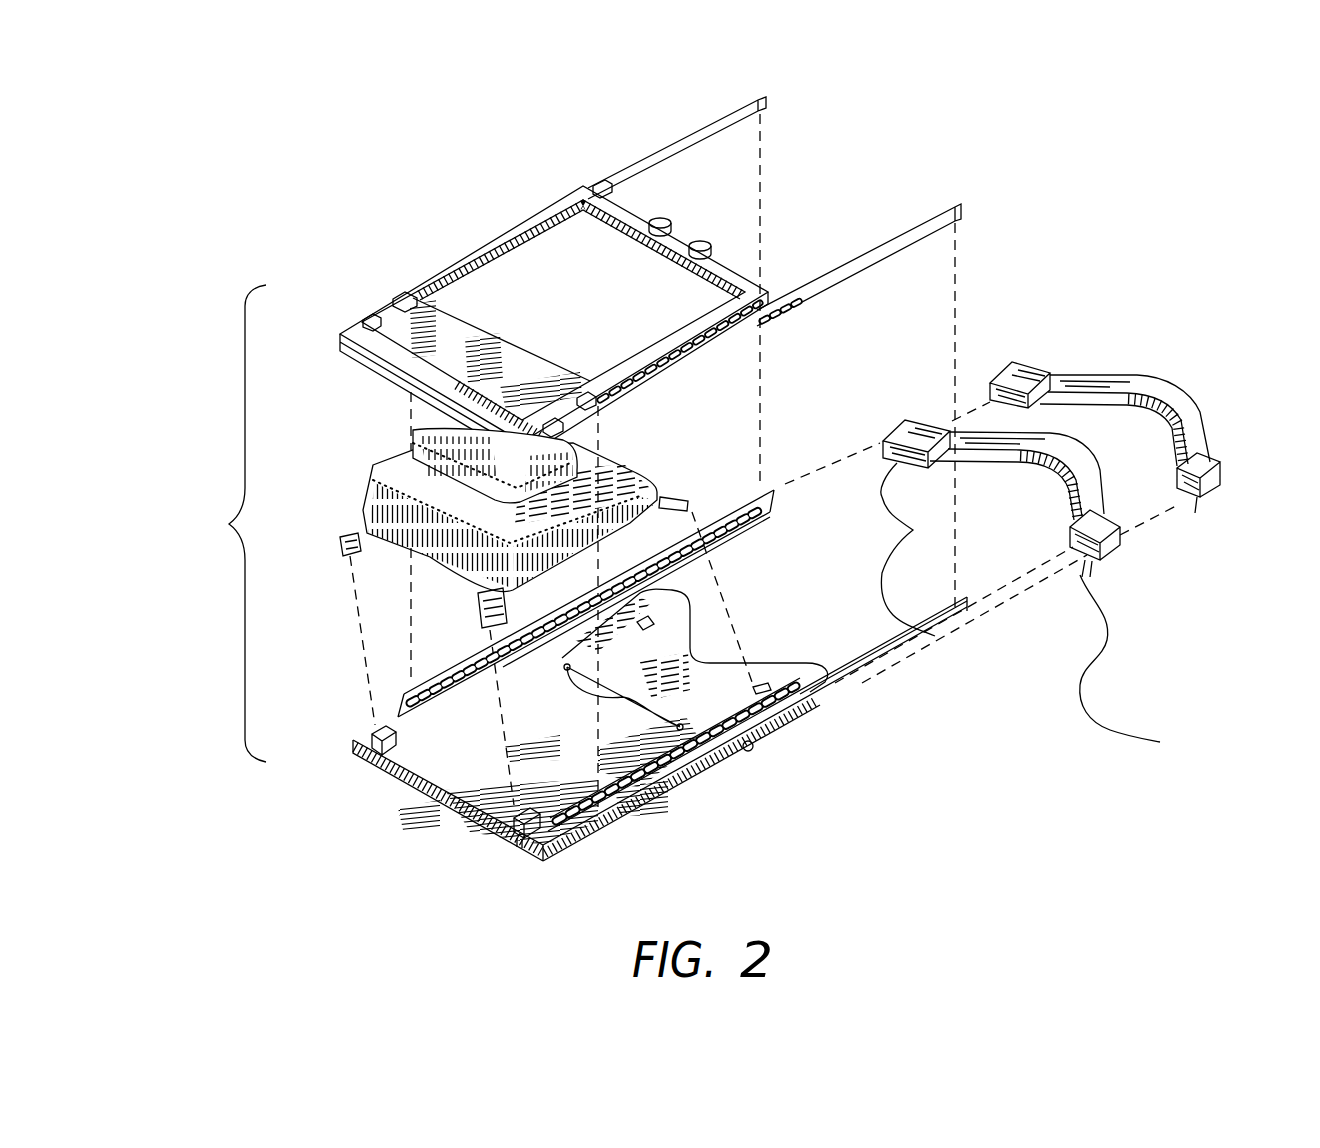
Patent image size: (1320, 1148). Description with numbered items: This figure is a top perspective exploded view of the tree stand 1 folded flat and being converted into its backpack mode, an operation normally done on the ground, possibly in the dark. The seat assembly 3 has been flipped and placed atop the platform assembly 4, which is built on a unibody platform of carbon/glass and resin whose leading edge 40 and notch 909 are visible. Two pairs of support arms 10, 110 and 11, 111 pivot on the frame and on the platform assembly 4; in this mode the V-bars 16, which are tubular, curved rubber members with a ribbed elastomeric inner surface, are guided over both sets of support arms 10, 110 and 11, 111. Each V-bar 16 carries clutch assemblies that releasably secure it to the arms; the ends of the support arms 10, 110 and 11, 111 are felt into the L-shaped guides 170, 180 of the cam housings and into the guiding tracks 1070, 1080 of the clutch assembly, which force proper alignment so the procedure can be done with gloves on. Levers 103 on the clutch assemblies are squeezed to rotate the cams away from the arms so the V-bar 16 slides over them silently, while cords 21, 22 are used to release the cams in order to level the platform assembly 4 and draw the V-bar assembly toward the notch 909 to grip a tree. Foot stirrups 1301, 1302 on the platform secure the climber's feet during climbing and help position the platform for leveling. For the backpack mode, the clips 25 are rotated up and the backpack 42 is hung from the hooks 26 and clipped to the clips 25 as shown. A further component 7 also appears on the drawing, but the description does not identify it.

The tree stand 1 is at (224, 523).
The seat assembly 3 is at (415, 202).
The platform assembly 4 is at (750, 795).
The knob 7 is at (713, 245).
The support arm 10 is at (727, 115).
The support arm 110 is at (923, 223).
The support arm 11 is at (768, 512).
The support arm 111 is at (897, 638).
The V-bar 16 is at (1218, 378).
The cord 21 is at (1107, 653).
The cord 22 is at (888, 488).
The clip 25 is at (533, 813).
The hook 26 is at (641, 622).
The leading edge 40 is at (440, 793).
The backpack 42 is at (587, 477).
The lever 103 is at (1145, 522).
The guide 170 is at (871, 409).
The guiding track 1070 is at (893, 432).
The guiding track 1080 is at (1058, 596).
The guide 180 is at (1093, 558).
The notch 909 is at (705, 661).
The foot stirrup 1301 is at (752, 752).
The foot stirrup 1302 is at (628, 700).